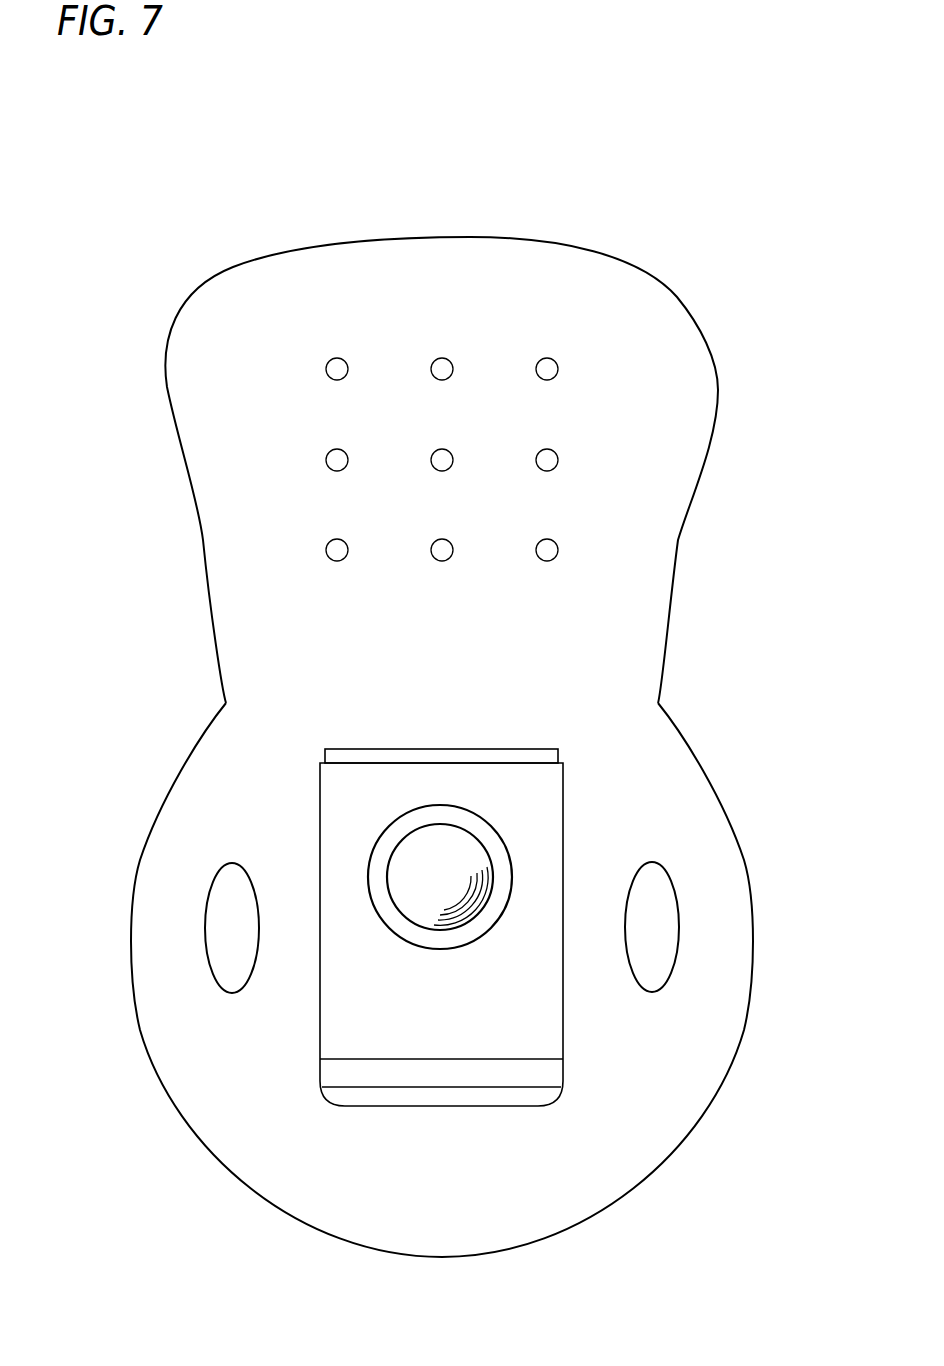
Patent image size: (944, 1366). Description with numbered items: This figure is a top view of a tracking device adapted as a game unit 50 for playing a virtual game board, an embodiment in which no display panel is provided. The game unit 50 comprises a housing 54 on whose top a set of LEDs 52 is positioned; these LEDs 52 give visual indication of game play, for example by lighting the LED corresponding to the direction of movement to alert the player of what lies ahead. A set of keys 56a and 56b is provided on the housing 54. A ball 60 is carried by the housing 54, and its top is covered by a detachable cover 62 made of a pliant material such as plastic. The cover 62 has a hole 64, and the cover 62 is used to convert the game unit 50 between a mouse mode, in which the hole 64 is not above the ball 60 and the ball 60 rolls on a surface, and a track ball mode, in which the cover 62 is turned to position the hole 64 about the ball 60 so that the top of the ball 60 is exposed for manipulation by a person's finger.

The game unit 50 is at (490, 747).
The LEDs 52 is at (338, 363).
The housing 54 is at (705, 328).
The key 56a is at (662, 938).
The key 56b is at (237, 938).
The ball 60 is at (452, 862).
The detachable cover 62 is at (532, 1039).
The hole 64 is at (502, 892).